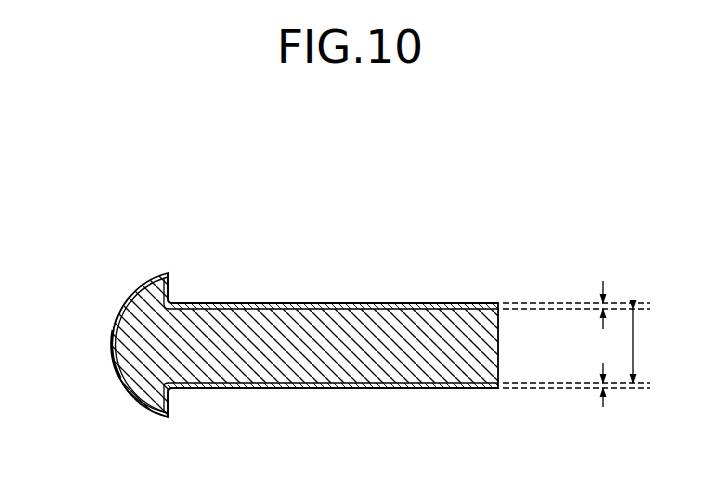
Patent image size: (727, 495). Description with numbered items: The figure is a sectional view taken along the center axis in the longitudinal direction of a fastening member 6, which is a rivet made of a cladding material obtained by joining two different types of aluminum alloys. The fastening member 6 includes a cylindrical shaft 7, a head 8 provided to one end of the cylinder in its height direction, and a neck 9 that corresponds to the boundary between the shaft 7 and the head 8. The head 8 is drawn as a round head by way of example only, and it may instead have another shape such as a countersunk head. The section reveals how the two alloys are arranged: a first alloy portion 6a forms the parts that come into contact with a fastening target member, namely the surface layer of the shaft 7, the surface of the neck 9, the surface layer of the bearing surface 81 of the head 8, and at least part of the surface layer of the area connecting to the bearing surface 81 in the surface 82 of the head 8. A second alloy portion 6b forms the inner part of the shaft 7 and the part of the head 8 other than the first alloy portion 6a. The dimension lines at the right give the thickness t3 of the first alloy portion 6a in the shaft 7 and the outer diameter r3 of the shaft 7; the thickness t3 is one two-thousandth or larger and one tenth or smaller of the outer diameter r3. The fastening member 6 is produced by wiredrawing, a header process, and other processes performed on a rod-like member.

The fastening member 6 is at (432, 205).
The first alloy portion 6a is at (328, 303).
The second alloy portion 6b is at (137, 391).
The shaft 7 is at (403, 373).
The head 8 is at (112, 345).
The bearing surface 81 is at (172, 403).
The surface of the head 82 is at (110, 363).
The neck 9 is at (170, 300).
The thickness of the first alloy portion t3 is at (606, 305).
The outer diameter of the shaft r3 is at (643, 346).